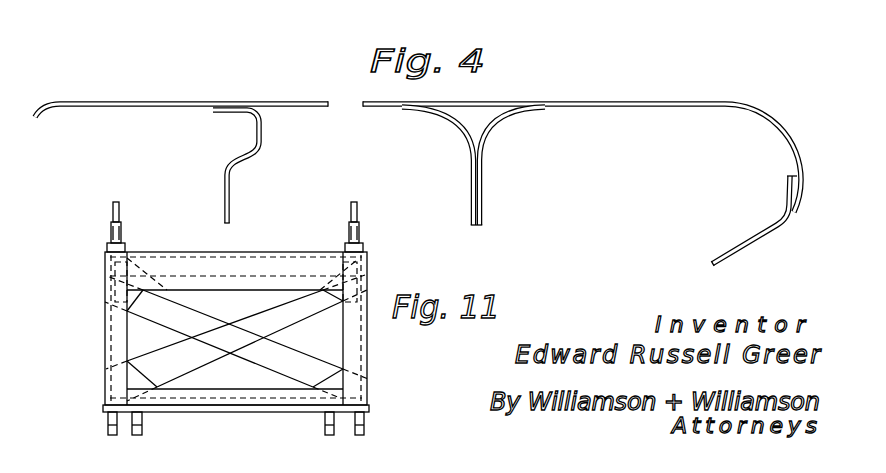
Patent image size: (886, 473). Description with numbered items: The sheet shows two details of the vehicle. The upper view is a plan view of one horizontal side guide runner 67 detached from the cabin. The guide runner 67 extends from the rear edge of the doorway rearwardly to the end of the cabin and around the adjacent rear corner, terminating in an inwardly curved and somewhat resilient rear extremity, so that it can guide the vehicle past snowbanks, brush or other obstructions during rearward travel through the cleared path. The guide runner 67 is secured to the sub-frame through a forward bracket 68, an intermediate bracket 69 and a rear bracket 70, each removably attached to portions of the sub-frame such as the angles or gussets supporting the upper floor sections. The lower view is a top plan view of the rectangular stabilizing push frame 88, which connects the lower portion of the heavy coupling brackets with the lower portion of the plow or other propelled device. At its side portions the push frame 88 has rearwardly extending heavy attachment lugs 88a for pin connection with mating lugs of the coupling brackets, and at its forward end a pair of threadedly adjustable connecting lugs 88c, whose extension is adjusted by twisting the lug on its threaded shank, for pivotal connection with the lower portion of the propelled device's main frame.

In FIG. 4, the horizontal guide runner 67 is at (622, 103).
In FIG. 4, the forward bracket 68 is at (229, 156).
In FIG. 4, the intermediate bracket 69 is at (483, 155).
In FIG. 4, the rear bracket 70 is at (743, 233).
In FIG. 11, the push frame 88 is at (104, 333).
In FIG. 11, the attachment lugs 88a is at (325, 420).
In FIG. 11, the threadedly adjustable connecting lugs 88c is at (113, 207).